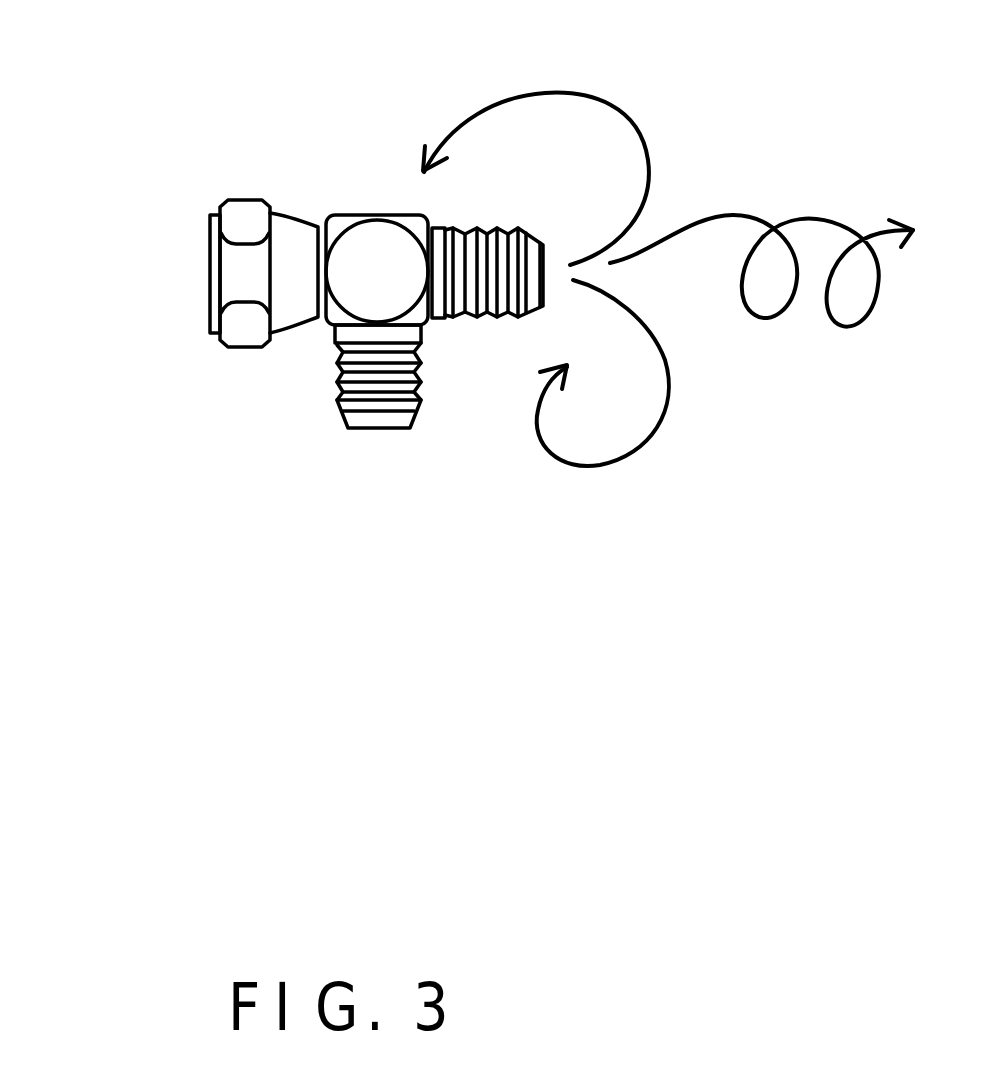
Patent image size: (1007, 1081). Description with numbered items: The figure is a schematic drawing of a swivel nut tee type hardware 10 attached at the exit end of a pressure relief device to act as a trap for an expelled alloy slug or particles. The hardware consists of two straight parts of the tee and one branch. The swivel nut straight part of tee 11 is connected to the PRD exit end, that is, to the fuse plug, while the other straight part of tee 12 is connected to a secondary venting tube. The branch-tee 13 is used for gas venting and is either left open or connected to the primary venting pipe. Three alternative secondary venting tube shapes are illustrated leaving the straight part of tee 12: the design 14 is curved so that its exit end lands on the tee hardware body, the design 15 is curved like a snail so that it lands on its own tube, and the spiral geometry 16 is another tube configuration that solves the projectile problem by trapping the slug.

The swivel nut tee type hardware 10 is at (392, 263).
The swivel nut straight part of tee 11 is at (240, 283).
The straight part of tee 12 is at (457, 318).
The branch-tee 13 is at (343, 385).
The secondary venting tube design 14 is at (598, 108).
The secondary venting tube design 15 is at (653, 435).
The spiral geometry 16 is at (725, 213).